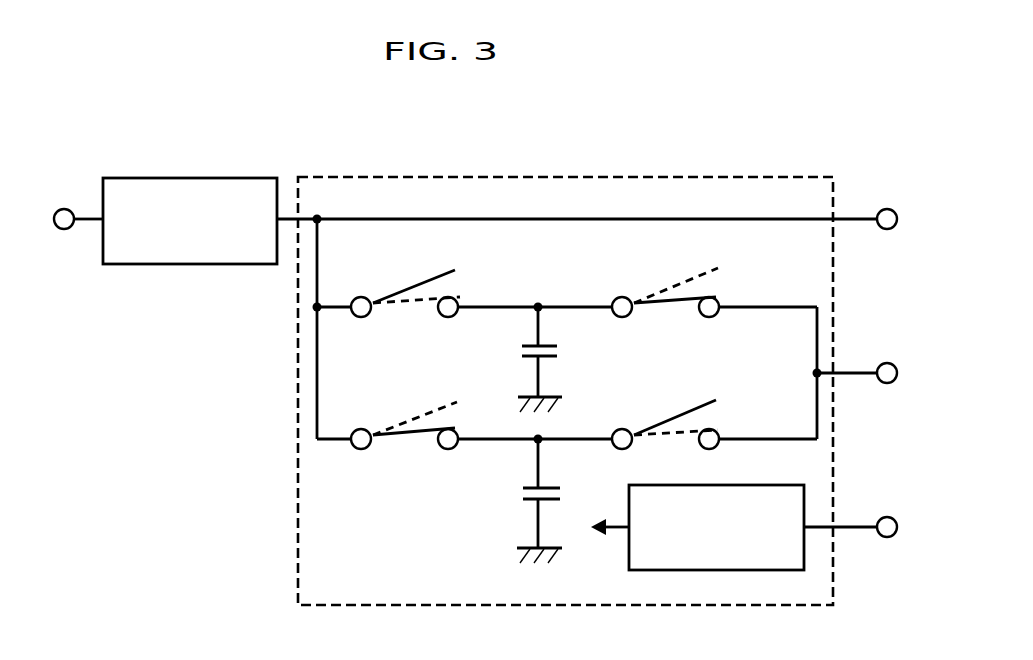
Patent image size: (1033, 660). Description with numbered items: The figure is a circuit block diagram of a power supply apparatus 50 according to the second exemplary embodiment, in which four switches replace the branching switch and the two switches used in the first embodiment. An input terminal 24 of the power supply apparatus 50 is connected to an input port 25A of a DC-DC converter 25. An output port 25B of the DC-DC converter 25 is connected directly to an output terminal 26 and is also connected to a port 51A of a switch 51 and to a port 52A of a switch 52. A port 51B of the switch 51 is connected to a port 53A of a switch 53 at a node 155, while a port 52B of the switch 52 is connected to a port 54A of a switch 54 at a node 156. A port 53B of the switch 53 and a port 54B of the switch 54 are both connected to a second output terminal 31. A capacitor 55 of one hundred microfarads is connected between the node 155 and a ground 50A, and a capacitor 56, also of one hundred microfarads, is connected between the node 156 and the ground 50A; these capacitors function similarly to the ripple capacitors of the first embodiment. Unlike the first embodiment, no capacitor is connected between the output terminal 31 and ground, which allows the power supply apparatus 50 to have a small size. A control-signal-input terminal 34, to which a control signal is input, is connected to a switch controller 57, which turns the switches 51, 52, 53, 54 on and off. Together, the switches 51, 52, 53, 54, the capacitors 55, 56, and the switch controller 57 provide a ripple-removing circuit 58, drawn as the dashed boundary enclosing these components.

The input terminal 24 is at (62, 207).
The DC-DC converter 25 is at (182, 177).
The input port 25A is at (88, 222).
The output port 25B is at (283, 217).
The output terminal 26 is at (887, 205).
The output terminal 31 is at (883, 360).
The control-signal-input terminal 34 is at (886, 515).
The power supply apparatus 50 is at (763, 170).
The ground 50A is at (530, 408).
The switch 51 is at (417, 287).
The port 51A is at (357, 297).
The port 51B is at (460, 297).
The switch 52 is at (417, 418).
The port 52A is at (357, 429).
The port 52B is at (460, 429).
The switch 53 is at (670, 285).
The port 53A is at (618, 297).
The port 53B is at (722, 297).
The switch 54 is at (670, 418).
The port 54A is at (618, 429).
The port 54B is at (722, 429).
The capacitor 55 is at (557, 352).
The capacitor 56 is at (555, 492).
The switch controller 57 is at (804, 568).
The ripple-removing circuit 58 is at (552, 177).
The node 155 is at (540, 297).
The node 156 is at (536, 442).